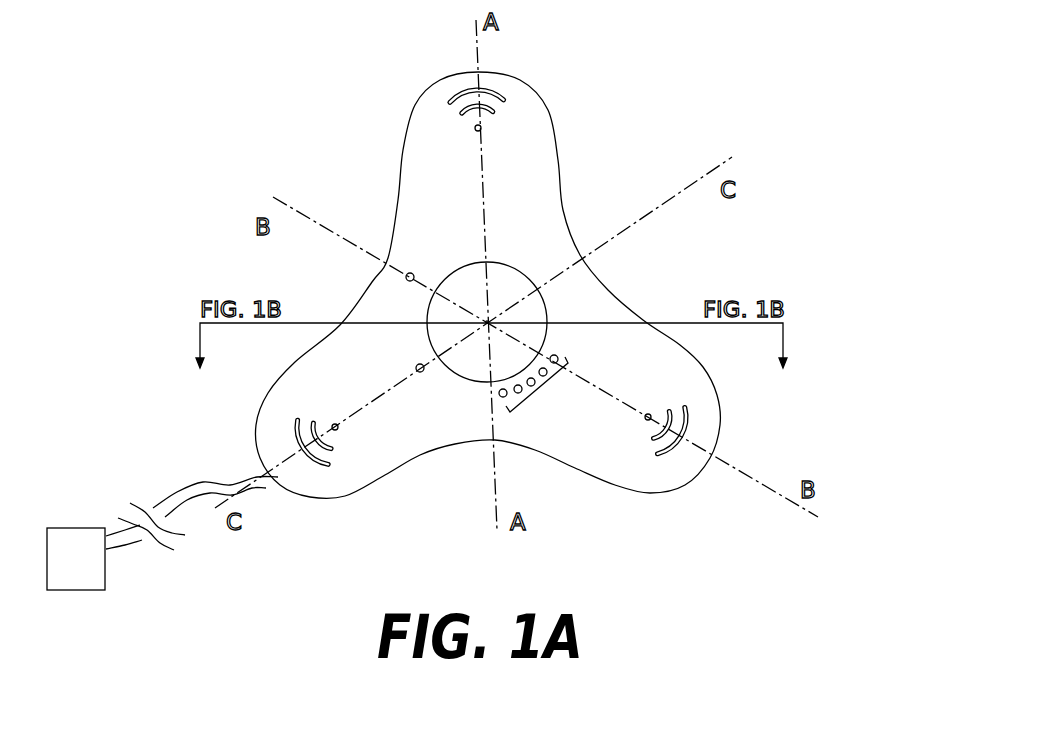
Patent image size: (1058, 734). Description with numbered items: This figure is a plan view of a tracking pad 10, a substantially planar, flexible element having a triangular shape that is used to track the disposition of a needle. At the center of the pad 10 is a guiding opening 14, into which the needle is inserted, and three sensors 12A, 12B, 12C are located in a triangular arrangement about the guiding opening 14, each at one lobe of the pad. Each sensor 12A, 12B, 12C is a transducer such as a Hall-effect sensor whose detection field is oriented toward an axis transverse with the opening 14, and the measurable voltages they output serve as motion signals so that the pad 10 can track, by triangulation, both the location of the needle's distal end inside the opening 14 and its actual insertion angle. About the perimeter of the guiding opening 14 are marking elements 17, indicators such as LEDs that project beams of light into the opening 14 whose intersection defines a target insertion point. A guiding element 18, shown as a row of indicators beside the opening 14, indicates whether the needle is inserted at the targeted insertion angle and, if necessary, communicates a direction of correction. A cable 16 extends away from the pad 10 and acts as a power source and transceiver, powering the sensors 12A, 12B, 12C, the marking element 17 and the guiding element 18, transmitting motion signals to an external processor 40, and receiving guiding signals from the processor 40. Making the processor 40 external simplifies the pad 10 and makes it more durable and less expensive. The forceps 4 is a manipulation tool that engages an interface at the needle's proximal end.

The tracking pad 10 is at (638, 130).
The guiding opening 14 is at (462, 263).
The forceps 4 is at (498, 322).
The marking element 17 is at (406, 277).
The guiding element 18 is at (552, 386).
The sensor 12A is at (503, 95).
The sensor 12B is at (685, 420).
The sensor 12C is at (262, 409).
The cable 16 is at (180, 487).
The processor 40 is at (90, 567).